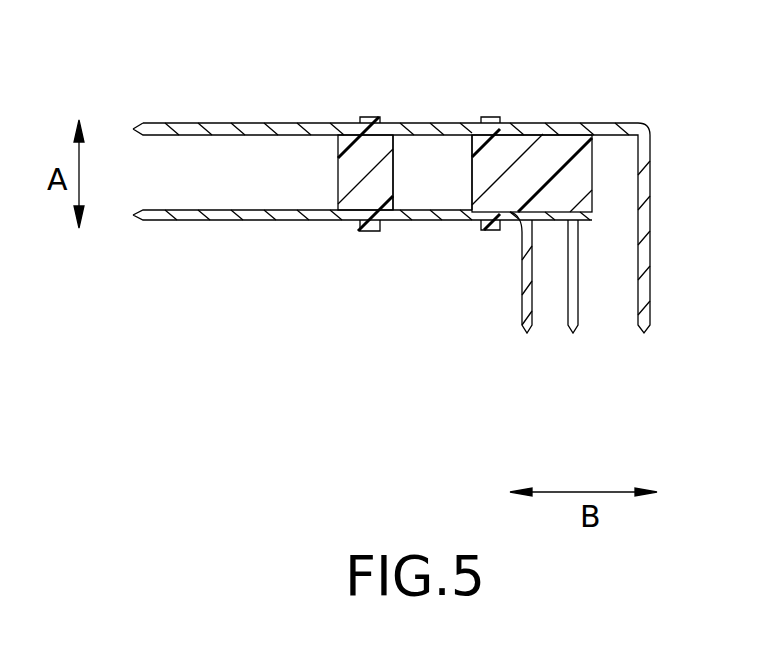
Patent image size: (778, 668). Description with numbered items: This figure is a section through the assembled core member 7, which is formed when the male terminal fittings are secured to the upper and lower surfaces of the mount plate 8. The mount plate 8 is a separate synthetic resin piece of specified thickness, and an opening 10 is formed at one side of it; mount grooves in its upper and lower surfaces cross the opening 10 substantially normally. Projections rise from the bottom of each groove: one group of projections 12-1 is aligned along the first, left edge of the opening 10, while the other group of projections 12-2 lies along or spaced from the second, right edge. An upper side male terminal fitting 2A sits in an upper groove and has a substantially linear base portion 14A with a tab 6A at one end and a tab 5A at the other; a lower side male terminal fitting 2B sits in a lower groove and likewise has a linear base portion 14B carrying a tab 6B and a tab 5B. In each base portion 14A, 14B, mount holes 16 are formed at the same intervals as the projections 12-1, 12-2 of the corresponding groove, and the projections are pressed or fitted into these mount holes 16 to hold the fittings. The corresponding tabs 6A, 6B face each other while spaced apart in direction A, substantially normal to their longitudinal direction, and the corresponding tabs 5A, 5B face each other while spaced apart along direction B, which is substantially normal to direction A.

The core member 7 is at (279, 98).
The tab 6A is at (203, 123).
The tab 6B is at (192, 222).
The upper side male terminal fitting 2A is at (466, 110).
The lower side male terminal fitting 2B is at (294, 240).
The projection 12-1 is at (370, 118).
The projection 12-2 is at (513, 235).
The base portion 14A is at (433, 123).
The base portion 14B is at (443, 222).
The mount hole 16 is at (497, 119).
The mount plate 8 is at (578, 123).
The opening 10 is at (397, 182).
The tab 5A is at (648, 282).
The tab 5B is at (530, 307).